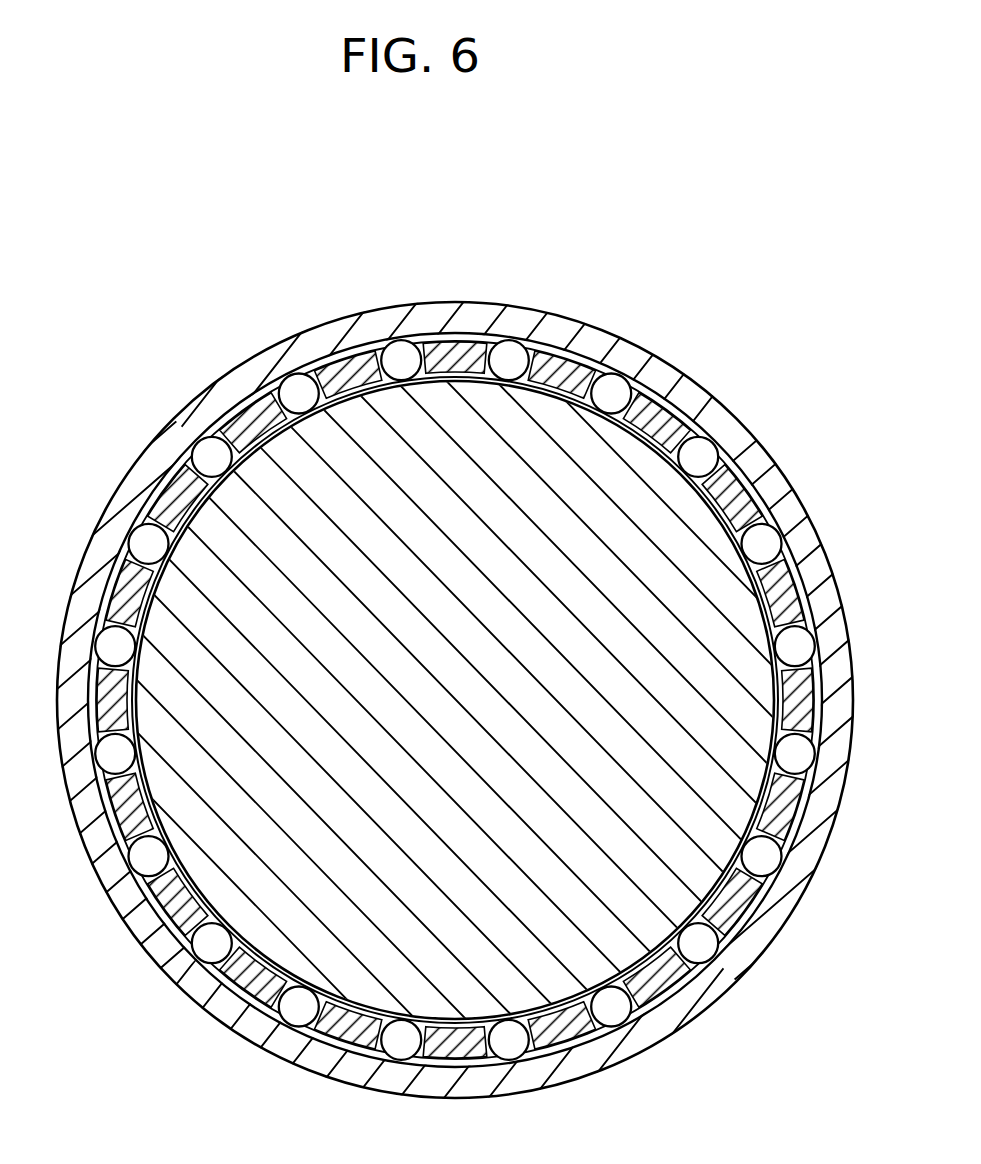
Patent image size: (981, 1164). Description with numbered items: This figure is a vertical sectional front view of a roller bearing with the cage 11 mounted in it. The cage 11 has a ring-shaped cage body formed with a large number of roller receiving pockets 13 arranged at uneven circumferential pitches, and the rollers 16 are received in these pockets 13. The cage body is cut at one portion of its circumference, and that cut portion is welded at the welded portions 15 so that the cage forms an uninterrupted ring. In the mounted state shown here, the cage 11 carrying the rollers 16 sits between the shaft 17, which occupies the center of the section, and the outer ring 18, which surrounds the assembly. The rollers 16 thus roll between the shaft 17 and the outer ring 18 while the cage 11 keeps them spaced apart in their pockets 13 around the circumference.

The cage 11 is at (680, 416).
The roller receiving pockets 13 is at (518, 352).
The welded portions 15 is at (430, 345).
The rollers 16 is at (527, 348).
The shaft 17 is at (625, 958).
The outer ring 18 is at (785, 890).